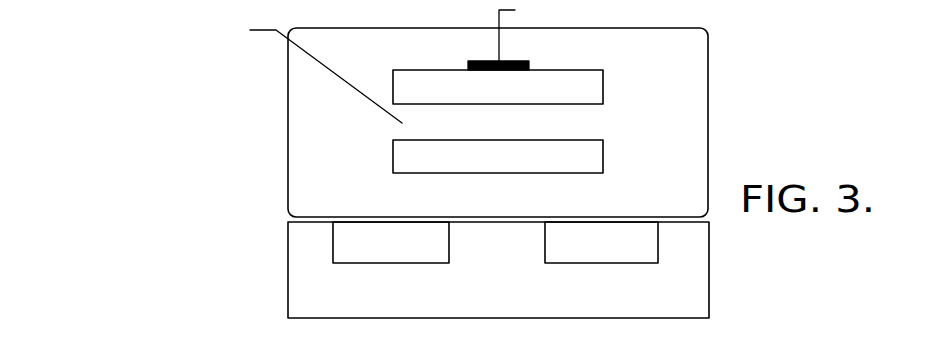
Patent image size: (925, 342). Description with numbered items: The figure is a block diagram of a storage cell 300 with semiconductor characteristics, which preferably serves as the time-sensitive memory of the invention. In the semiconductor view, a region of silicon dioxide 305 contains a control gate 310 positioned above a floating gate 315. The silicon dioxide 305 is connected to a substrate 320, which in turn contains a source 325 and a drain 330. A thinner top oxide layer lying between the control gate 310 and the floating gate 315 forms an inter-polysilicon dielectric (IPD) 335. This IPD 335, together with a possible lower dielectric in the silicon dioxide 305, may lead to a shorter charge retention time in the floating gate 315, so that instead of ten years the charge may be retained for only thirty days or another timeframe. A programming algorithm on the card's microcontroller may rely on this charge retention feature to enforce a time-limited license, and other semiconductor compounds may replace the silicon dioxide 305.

The storage cell 300 is at (770, 103).
The silicon dioxide 305 is at (287, 122).
The control gate 310 is at (604, 90).
The floating gate 315 is at (393, 157).
The substrate 320 is at (288, 274).
The source 325 is at (385, 265).
The drain 330 is at (595, 265).
The inter-polysilicon dielectric (IPD) 335 is at (132, 58).